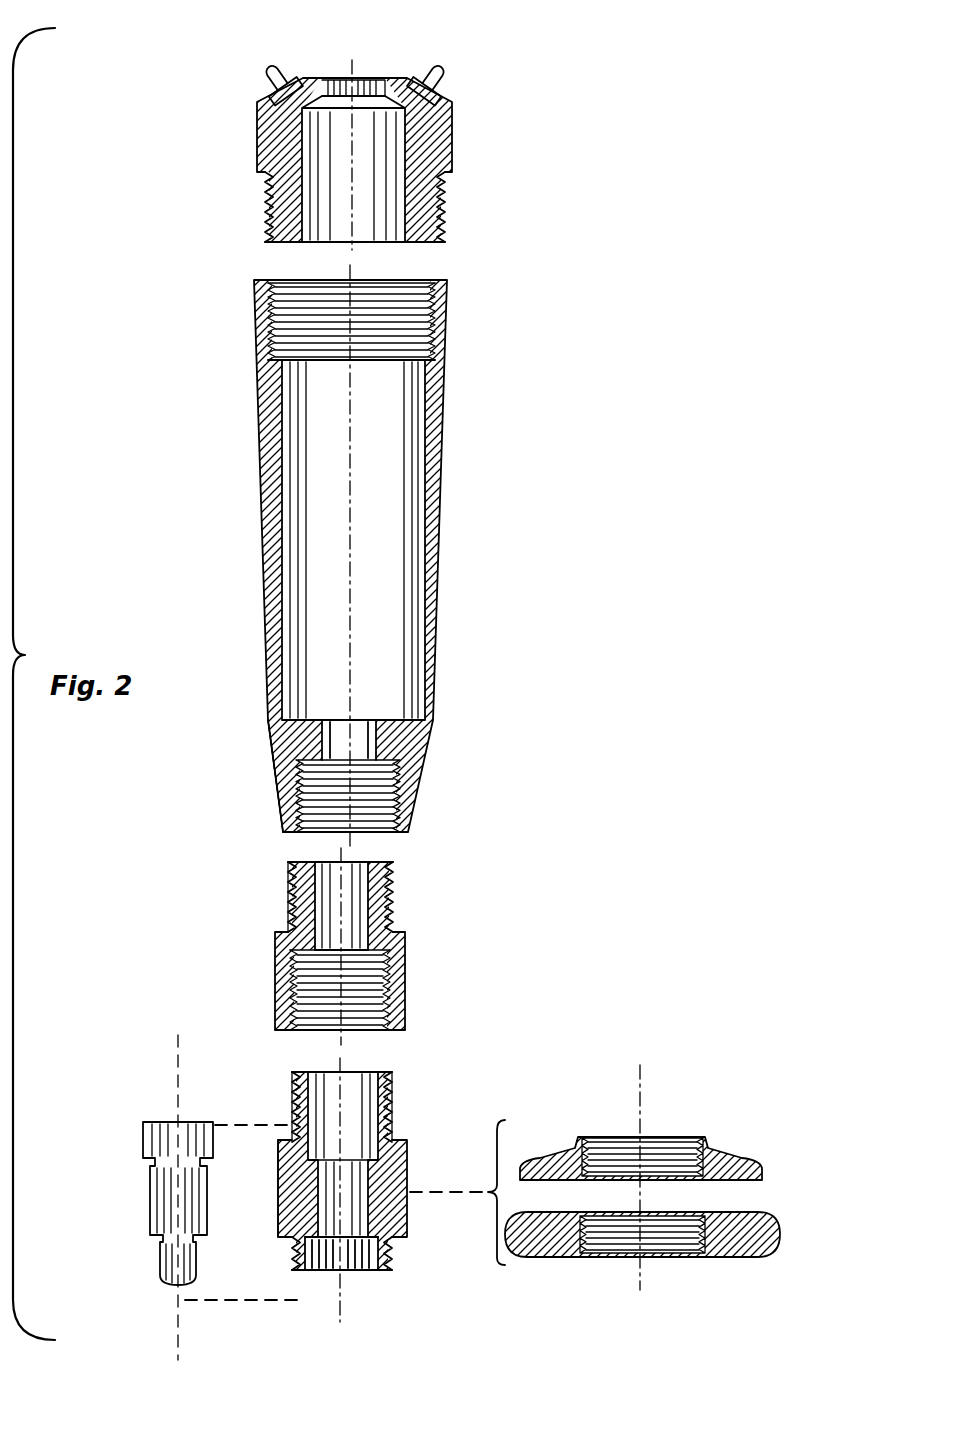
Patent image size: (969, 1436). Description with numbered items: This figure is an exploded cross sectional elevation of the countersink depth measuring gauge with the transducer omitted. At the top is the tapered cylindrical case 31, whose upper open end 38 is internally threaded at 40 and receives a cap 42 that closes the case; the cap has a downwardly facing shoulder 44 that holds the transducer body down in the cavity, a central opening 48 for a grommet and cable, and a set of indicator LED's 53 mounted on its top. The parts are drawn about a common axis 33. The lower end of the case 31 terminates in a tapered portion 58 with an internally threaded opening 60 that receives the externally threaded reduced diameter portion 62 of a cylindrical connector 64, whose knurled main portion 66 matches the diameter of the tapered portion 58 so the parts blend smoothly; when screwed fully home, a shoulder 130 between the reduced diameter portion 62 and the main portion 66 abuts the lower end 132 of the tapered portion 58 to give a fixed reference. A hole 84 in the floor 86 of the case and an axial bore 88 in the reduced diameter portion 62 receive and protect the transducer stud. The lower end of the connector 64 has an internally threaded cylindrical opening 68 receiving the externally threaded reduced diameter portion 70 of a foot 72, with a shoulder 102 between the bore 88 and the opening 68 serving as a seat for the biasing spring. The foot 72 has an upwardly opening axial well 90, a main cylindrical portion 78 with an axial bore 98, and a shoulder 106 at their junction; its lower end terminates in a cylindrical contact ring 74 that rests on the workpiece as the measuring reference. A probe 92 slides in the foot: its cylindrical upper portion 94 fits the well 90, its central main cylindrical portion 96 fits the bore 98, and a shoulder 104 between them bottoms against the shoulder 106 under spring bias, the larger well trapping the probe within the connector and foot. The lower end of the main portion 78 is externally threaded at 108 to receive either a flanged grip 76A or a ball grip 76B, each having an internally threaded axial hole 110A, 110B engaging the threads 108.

The tapered cylindrical case 31 is at (505, 516).
The longitudinal axis 33 is at (355, 400).
The upper open end 38 is at (440, 320).
The internal threads 40 is at (415, 285).
The cap 42 is at (508, 138).
The downwardly facing shoulder 44 is at (280, 242).
The central opening 48 is at (368, 88).
The indicator LED's 53 is at (445, 76).
The tapered portion 58 is at (272, 775).
The internally threaded opening 60 is at (405, 838).
The reduced diameter portion 62 is at (395, 892).
The cylindrical connector 64 is at (490, 986).
The main portion 66 is at (275, 985).
The internally threaded cylindrical opening 68 is at (277, 1020).
The reduced diameter portion 70 is at (292, 1100).
The foot 72 is at (418, 1168).
The cylindrical contact ring 74 is at (392, 1262).
The flanged base plate 76A is at (736, 1150).
The ball grip 76B is at (780, 1205).
The main cylindrical portion 78 is at (278, 1178).
The hole 84 is at (372, 700).
The floor 86 is at (398, 766).
The axial bore 88 is at (290, 890).
The axial well 90 is at (300, 1084).
The probe 92 is at (132, 1216).
The cylindrical upper portion 94 is at (143, 1140).
The central main cylindrical portion 96 is at (152, 1215).
The axial bore 98 is at (355, 1205).
The shoulder 102 is at (277, 968).
The shoulder 104 is at (147, 1162).
The shoulder 106 is at (377, 1125).
The external threads 108 is at (280, 1220).
The threaded bore of base plate 110A is at (600, 1140).
The threaded bore of base plate 110B is at (590, 1220).
The shoulder 130 is at (398, 938).
The lower end 132 is at (284, 838).